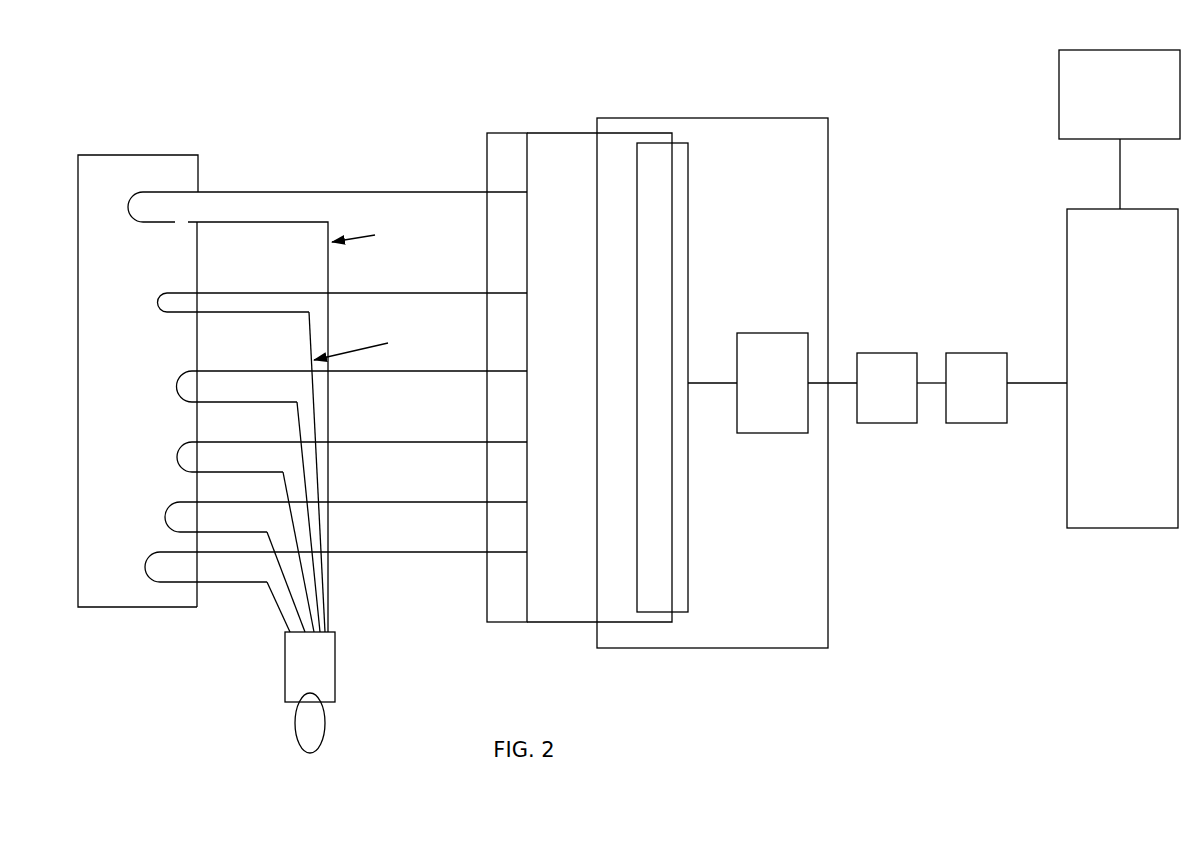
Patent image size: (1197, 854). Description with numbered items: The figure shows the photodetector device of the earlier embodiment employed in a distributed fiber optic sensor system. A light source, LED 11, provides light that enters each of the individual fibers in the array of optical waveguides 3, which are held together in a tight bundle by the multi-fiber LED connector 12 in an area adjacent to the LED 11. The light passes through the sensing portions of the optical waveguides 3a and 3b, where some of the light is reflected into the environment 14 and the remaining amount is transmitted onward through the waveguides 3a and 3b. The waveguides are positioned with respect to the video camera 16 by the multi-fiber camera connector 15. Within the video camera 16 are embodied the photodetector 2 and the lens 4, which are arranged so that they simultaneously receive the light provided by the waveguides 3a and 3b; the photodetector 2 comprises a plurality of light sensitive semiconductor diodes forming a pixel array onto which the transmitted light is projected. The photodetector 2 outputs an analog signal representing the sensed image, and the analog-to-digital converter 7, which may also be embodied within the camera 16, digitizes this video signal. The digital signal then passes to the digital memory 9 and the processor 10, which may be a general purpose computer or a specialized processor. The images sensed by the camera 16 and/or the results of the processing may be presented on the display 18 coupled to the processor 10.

The array of optical waveguides 3 is at (218, 547).
The optical waveguide 3a is at (138, 224).
The optical waveguide 3b is at (158, 311).
The environment 14 is at (233, 393).
The multi-fiber camera connector 15 is at (521, 132).
The video camera 16 is at (714, 116).
The lens 4 is at (662, 377).
The photodetector 2 is at (772, 383).
The analog-to-digital converter 7 is at (901, 388).
The digital memory 9 is at (1006, 388).
The processor 10 is at (1122, 333).
The display 18 is at (1119, 94).
The multi-fiber LED connector 12 is at (310, 667).
The LED 11 is at (310, 723).